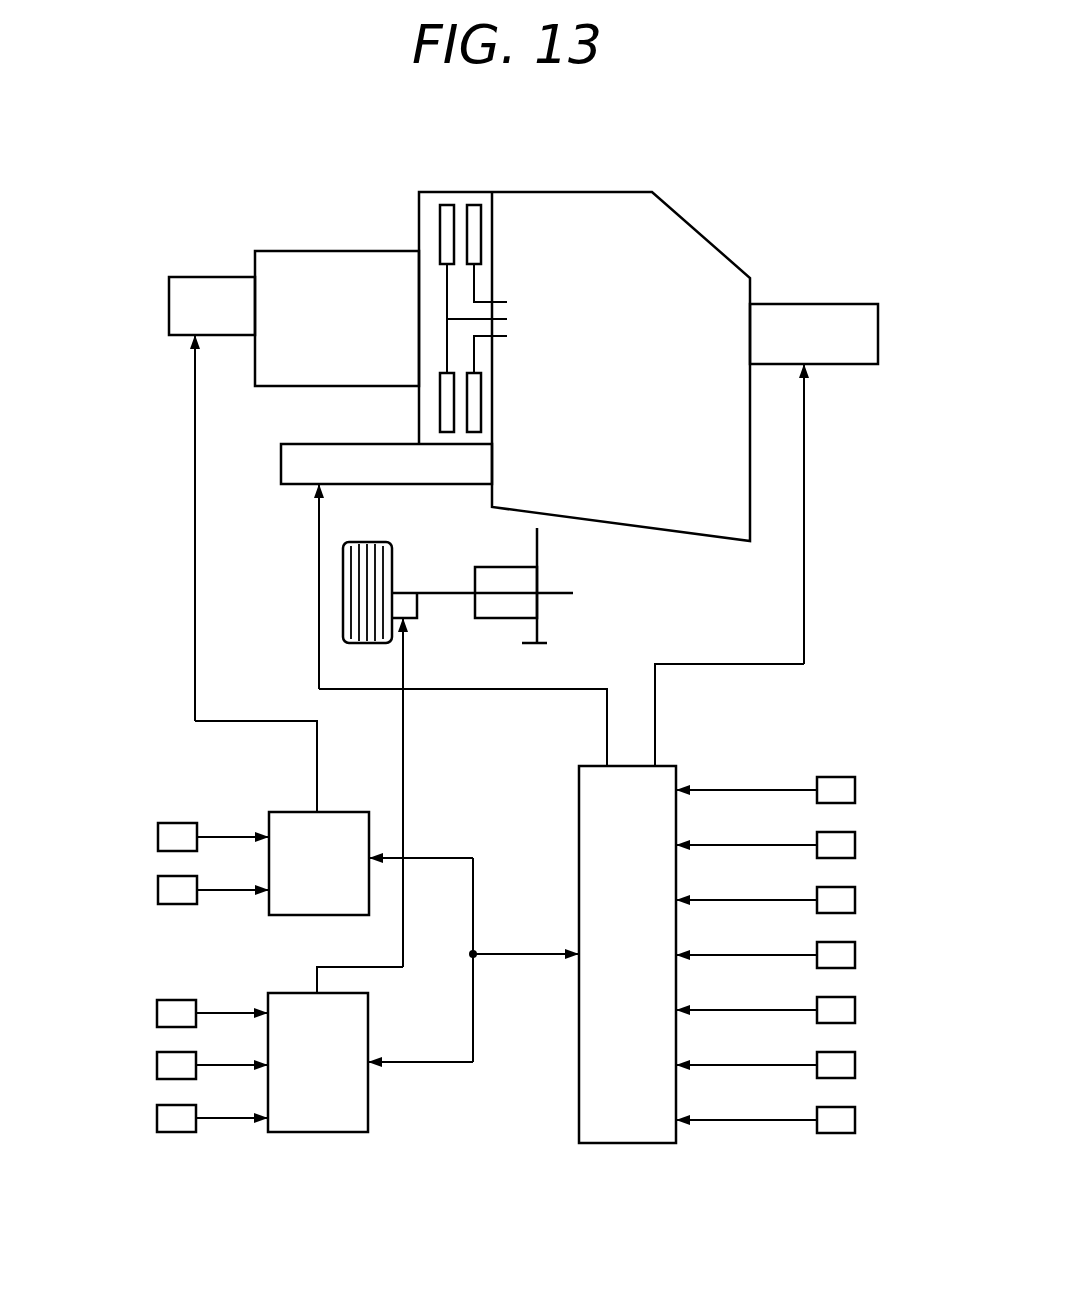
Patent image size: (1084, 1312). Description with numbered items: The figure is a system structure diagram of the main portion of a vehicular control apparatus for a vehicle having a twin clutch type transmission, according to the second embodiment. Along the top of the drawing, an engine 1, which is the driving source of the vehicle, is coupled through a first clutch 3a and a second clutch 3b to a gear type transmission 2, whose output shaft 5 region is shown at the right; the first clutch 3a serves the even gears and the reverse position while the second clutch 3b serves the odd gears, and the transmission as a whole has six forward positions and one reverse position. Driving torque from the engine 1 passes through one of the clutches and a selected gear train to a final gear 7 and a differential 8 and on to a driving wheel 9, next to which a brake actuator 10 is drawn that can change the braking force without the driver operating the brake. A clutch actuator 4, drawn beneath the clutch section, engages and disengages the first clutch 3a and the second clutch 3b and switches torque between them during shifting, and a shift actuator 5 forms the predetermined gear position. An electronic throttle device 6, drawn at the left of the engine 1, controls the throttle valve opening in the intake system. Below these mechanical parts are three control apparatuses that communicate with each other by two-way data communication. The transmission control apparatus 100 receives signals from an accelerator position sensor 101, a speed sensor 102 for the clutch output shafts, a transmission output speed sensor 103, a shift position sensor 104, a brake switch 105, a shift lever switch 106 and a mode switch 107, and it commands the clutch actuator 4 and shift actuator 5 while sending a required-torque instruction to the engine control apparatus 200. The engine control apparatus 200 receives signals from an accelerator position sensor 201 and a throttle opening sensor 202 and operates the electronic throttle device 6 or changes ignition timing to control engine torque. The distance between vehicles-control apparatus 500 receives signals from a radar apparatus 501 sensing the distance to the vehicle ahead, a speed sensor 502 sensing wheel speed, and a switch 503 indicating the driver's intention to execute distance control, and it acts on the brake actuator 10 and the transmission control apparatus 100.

The engine 1 is at (308, 251).
The gear type transmission 2 is at (700, 234).
The first clutch 3a is at (445, 205).
The second clutch 3b is at (474, 205).
The clutch actuator 4 is at (281, 460).
The shift actuator 5 is at (833, 304).
The electronic throttle device 6 is at (205, 277).
The final gear 7 is at (537, 553).
The differential 8 is at (497, 567).
The driving wheel 9 is at (372, 542).
The brake actuator 10 is at (417, 603).
The transmission control apparatus 100 is at (622, 1138).
The accelerator position sensor 101 is at (855, 790).
The speed sensor for clutch-output shaft 102 is at (855, 845).
The speed sensor for transmission output 103 is at (855, 900).
The shift position sensor 104 is at (855, 955).
The brake switch 105 is at (855, 1010).
The shift lever switch 106 is at (855, 1065).
The mode switch 107 is at (855, 1120).
The engine control apparatus 200 is at (289, 812).
The accelerator position sensor 201 is at (158, 837).
The throttle opening sensor 202 is at (158, 890).
The distance between vehicles-control apparatus 500 is at (307, 1123).
The radar apparatus 501 is at (157, 1013).
The speed sensor 502 is at (157, 1065).
The switch for distance between vehicles control 503 is at (157, 1118).